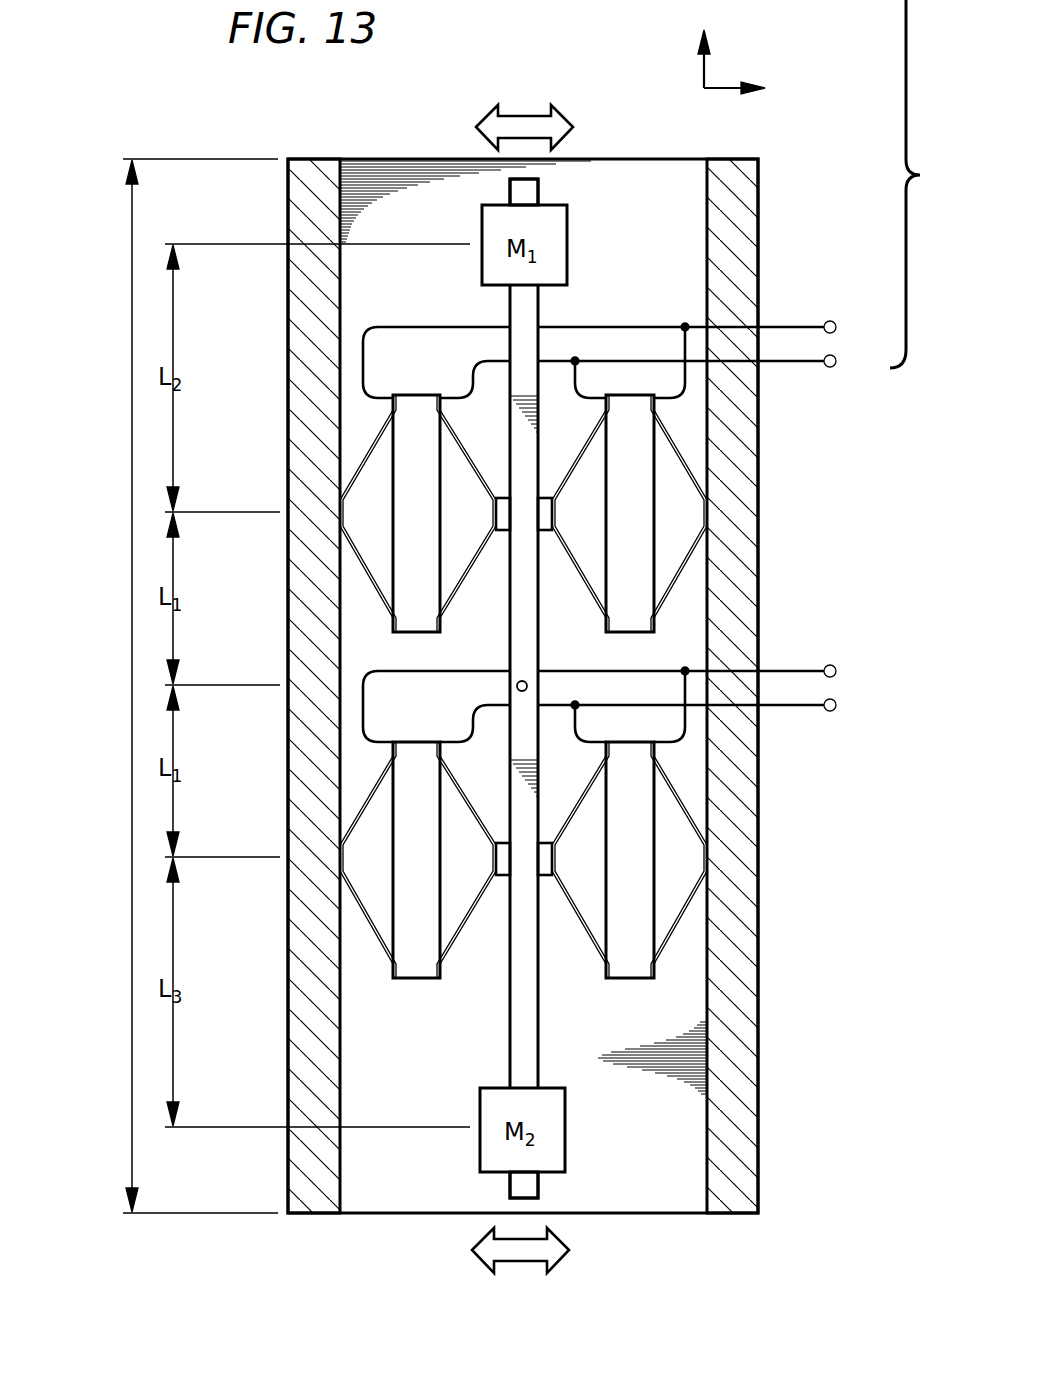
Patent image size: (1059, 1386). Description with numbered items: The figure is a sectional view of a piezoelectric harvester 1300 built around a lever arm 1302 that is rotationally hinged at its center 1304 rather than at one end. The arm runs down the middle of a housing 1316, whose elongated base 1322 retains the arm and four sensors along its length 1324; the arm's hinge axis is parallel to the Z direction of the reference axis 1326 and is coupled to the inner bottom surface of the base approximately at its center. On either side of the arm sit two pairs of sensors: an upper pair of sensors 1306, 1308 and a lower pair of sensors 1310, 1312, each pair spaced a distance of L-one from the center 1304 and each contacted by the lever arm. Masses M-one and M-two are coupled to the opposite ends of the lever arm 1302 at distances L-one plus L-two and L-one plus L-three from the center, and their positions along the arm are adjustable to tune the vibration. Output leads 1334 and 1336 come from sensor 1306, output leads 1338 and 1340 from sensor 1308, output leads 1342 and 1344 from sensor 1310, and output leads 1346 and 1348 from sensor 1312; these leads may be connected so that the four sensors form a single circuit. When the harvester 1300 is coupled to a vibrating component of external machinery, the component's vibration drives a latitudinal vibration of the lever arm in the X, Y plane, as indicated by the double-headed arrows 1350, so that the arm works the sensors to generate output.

The harvester 1300 is at (152, 100).
The lever arm 1302 is at (541, 186).
The center 1304 is at (515, 686).
The sensor 1306 is at (688, 437).
The sensor 1308 is at (365, 437).
The sensor 1310 is at (684, 933).
The sensor 1312 is at (365, 927).
The housing 1316 is at (763, 1090).
The base 1322 is at (388, 1192).
The length 1324 is at (128, 803).
The reference axis 1326 is at (720, 77).
The output lead 1334 is at (680, 340).
The output lead 1336 is at (585, 402).
The output lead 1338 is at (436, 324).
The output lead 1340 is at (470, 380).
The output lead 1342 is at (680, 688).
The output lead 1344 is at (578, 743).
The output lead 1346 is at (470, 725).
The output lead 1348 is at (430, 670).
The arrows 1350 is at (517, 112).